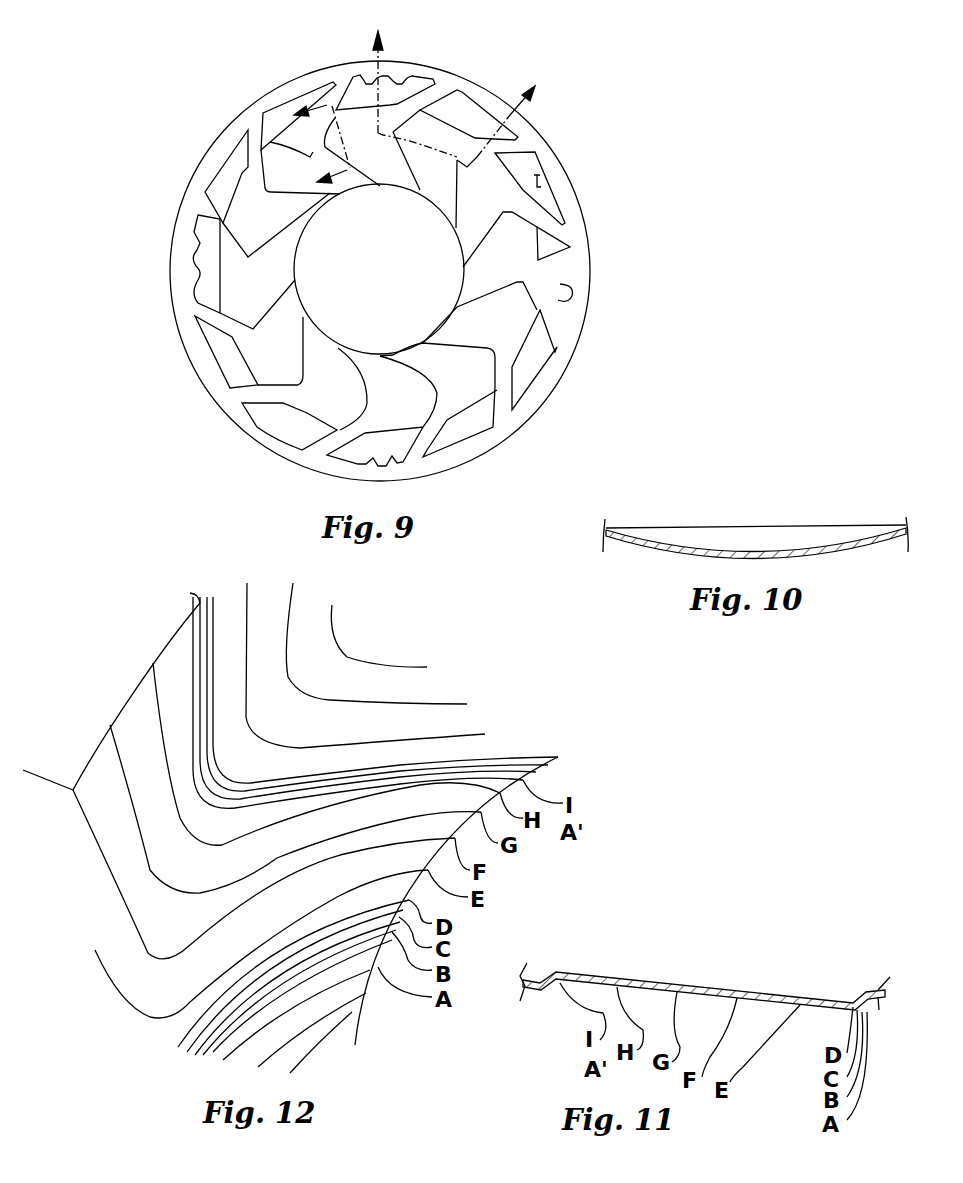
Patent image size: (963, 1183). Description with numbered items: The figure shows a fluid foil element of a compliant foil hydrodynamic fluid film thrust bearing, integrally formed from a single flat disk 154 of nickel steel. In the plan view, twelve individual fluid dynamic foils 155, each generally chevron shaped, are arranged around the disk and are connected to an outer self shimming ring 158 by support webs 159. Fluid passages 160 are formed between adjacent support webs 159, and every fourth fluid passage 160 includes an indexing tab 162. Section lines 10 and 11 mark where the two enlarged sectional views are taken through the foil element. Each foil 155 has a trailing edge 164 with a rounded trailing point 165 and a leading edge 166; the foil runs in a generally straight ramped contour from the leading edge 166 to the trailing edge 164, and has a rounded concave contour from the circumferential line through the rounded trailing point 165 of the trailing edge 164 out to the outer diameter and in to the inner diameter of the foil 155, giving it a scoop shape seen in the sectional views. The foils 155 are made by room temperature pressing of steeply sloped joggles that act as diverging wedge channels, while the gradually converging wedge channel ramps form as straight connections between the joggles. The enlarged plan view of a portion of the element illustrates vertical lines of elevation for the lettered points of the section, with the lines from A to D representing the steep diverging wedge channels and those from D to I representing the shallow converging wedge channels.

In FIG. 9, the flat disk 154 is at (608, 398).
In FIG. 9, the fluid dynamic foil 155 is at (261, 150).
In FIG. 9, the outer self shimming ring 158 is at (528, 119).
In FIG. 9, the support web 159 is at (553, 207).
In FIG. 9, the fluid passage 160 is at (395, 88).
In FIG. 9, the indexing tab 162 is at (567, 297).
In FIG. 10, the trailing edge 164 is at (828, 527).
In FIG. 11, the trailing edge 164 is at (555, 973).
In FIG. 9, the rounded trailing point 165 is at (520, 271).
In FIG. 10, the rounded trailing point 165 is at (742, 525).
In FIG. 11, the leading edge 166 is at (542, 980).
In FIG. 9, the section line 10- 10 is at (308, 148).
In FIG. 9, the section line 11- 11 is at (459, 88).